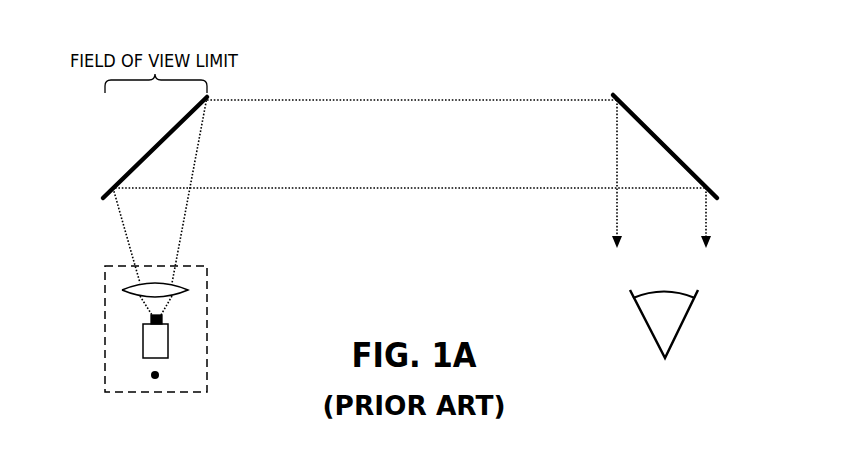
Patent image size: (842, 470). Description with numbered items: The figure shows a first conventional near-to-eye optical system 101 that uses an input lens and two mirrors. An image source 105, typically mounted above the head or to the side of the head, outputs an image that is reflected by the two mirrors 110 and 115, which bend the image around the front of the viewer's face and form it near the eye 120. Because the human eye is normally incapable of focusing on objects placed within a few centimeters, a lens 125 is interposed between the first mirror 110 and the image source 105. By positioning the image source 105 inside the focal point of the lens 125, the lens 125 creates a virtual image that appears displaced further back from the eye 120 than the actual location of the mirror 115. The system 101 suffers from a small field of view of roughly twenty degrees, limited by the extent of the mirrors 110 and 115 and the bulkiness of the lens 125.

The near-to-eye optical system 101 is at (389, 245).
The image source 105 is at (143, 342).
The first mirror 110 is at (122, 176).
The second mirror 115 is at (673, 152).
The eye 120 is at (678, 328).
The lens 125 is at (130, 288).